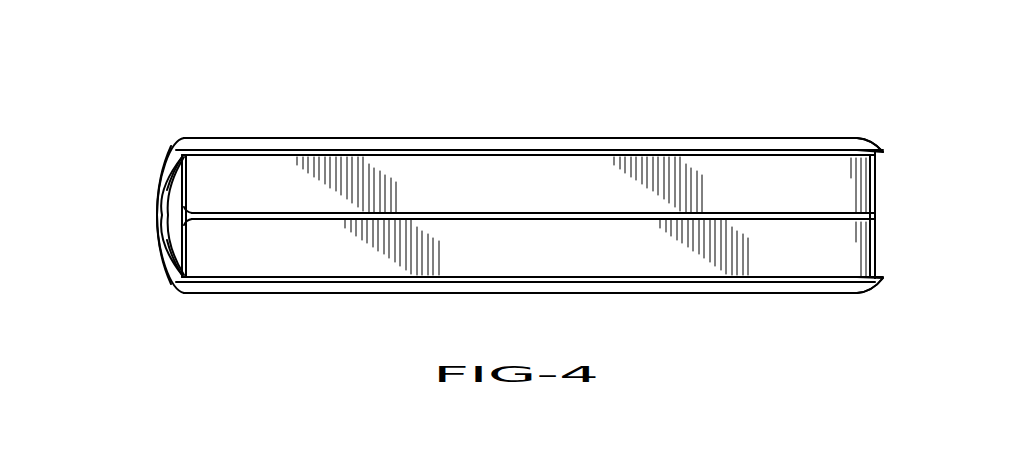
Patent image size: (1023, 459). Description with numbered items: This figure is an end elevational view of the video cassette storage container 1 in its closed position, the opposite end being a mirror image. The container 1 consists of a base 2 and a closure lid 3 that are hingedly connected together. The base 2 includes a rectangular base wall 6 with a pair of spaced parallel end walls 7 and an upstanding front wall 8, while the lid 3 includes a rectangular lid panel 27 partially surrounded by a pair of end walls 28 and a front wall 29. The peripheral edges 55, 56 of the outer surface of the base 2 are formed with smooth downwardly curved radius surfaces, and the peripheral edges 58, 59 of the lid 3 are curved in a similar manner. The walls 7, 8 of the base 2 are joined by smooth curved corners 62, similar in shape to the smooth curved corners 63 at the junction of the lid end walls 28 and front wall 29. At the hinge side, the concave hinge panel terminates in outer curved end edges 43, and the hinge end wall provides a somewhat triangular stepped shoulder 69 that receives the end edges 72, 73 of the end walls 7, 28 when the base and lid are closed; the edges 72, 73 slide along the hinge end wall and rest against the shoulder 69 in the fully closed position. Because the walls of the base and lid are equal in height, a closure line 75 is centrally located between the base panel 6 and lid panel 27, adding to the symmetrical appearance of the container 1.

The video cassette storage container 1 is at (848, 108).
The base 2 is at (400, 138).
The closure lid 3 is at (647, 293).
The base wall 6 is at (722, 137).
The end walls 7 is at (578, 176).
The front wall 8 is at (876, 200).
The lid panel 27 is at (768, 294).
The end walls 28 is at (285, 255).
The front wall 29 is at (876, 236).
The curved end edges 43 is at (157, 214).
The peripheral edges 55 is at (529, 148).
The peripheral edges 56 is at (870, 138).
The peripheral edges 58 is at (355, 288).
The peripheral edges 59 is at (877, 280).
The curved corners 62 is at (868, 172).
The curved corners 63 is at (868, 265).
The stepped shoulder 69 is at (188, 198).
The end edge 72 is at (183, 182).
The end edge 73 is at (183, 252).
The closure line 75 is at (461, 212).